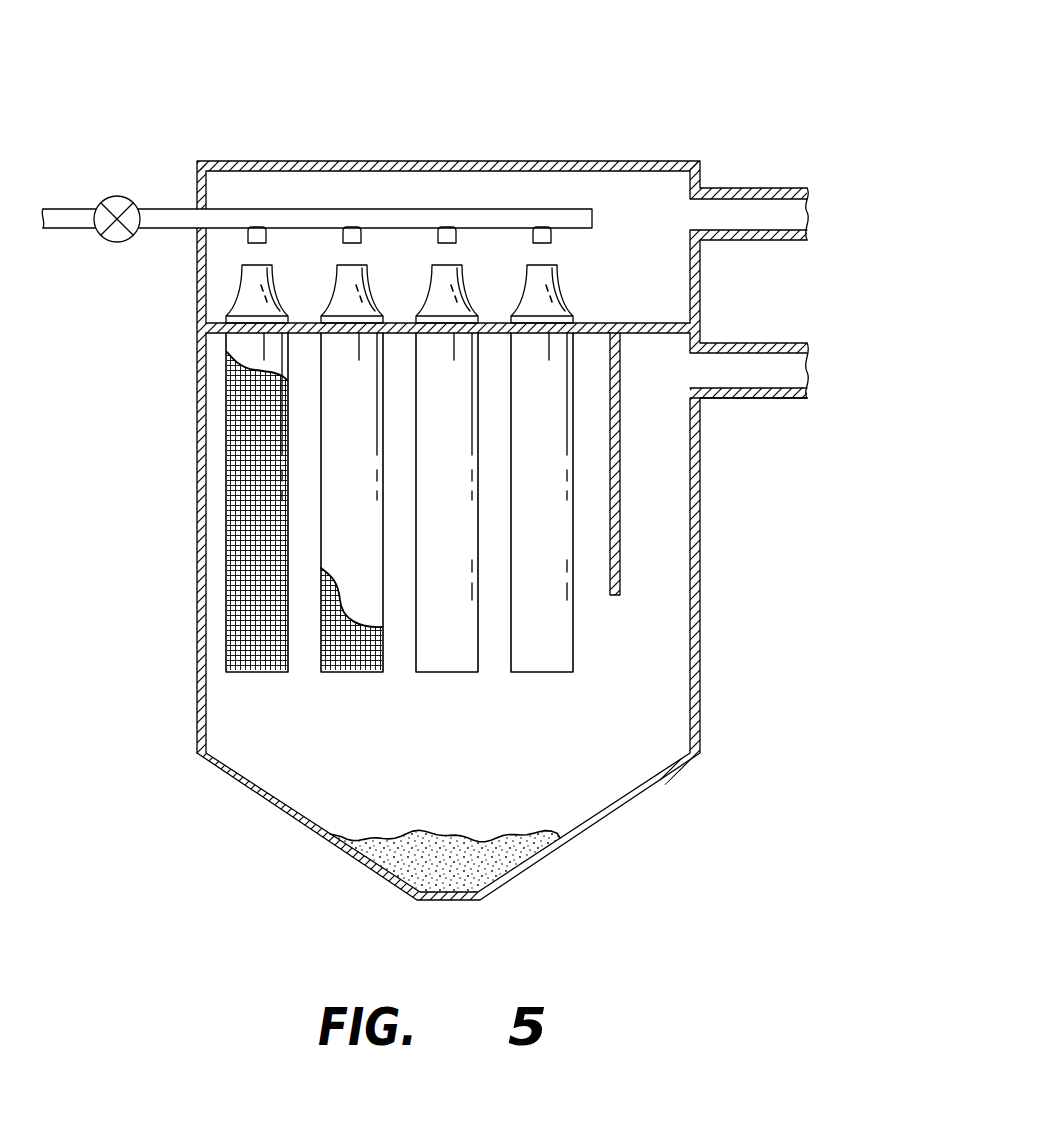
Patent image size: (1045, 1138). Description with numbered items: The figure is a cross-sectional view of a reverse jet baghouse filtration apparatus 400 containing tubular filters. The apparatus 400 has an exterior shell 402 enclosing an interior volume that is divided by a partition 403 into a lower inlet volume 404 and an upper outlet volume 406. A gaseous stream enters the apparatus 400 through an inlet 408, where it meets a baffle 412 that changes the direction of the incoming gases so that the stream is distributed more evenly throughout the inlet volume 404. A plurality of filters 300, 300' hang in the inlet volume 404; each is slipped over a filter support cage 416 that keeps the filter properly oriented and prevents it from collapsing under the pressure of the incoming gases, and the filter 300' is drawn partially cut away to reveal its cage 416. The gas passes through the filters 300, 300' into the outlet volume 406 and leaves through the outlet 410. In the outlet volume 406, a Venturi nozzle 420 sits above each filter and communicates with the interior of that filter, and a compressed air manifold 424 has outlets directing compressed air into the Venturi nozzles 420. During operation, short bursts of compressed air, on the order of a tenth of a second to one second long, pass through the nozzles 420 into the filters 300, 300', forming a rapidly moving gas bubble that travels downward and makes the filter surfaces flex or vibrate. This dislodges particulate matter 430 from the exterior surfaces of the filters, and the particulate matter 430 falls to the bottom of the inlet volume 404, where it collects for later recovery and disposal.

The reverse jet baghouse filtration apparatus 400 is at (670, 86).
The housing 402 is at (497, 161).
The partition 403 is at (665, 322).
The inlet volume 404 is at (477, 793).
The outlet volume 406 is at (650, 285).
The inlet 408 is at (752, 368).
The outlet 410 is at (758, 213).
The baffle 412 is at (622, 437).
The filter support cage 416 is at (253, 508).
The Venturi nozzle 420 is at (355, 283).
The compressed air manifold 424 is at (292, 209).
The particulate matter 430 is at (513, 833).
The filter 300 is at (433, 524).
The filter 300' is at (370, 539).